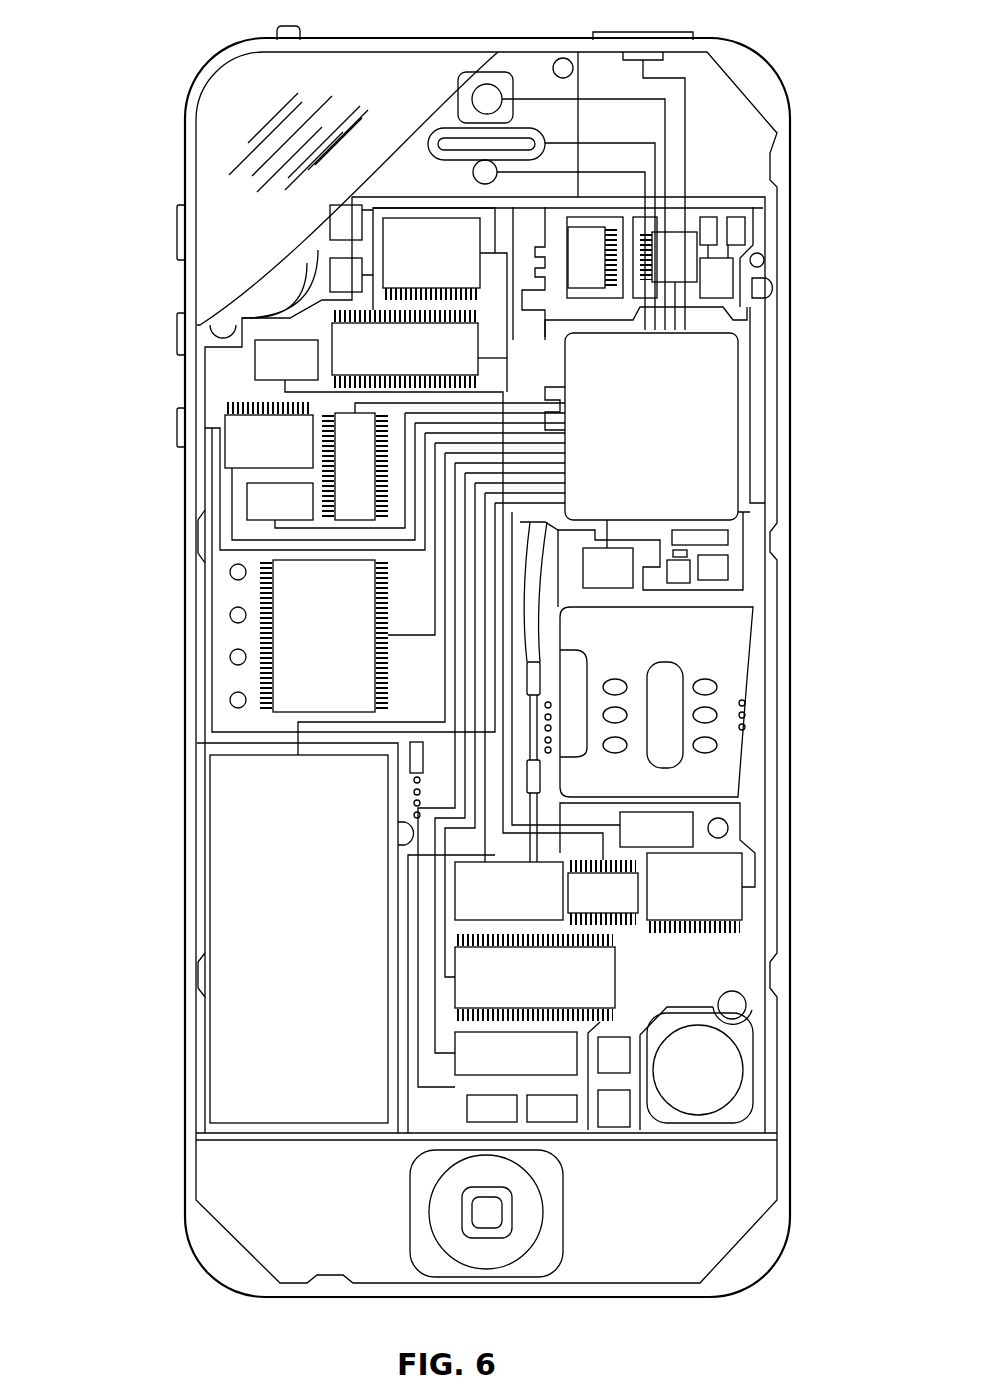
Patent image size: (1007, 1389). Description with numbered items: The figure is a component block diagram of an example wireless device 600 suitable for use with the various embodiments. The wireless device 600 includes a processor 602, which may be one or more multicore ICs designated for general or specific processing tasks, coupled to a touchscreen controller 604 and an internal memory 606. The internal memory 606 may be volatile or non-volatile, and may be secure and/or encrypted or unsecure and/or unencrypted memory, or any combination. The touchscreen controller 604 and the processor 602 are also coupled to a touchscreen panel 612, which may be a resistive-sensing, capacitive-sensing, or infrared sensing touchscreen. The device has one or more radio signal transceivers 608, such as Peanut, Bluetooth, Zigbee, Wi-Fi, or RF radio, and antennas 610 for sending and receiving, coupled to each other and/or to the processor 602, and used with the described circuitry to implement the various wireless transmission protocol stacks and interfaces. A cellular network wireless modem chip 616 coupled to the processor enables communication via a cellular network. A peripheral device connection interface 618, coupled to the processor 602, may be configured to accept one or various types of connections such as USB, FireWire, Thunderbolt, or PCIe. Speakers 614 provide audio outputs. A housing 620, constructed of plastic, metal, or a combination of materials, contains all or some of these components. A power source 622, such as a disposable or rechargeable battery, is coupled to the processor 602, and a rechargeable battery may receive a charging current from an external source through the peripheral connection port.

The wireless device 600 is at (152, 86).
The processor 602 is at (639, 363).
The touchscreen controller 604 is at (440, 300).
The internal memory 606 is at (419, 349).
The radio signal transceivers 608 is at (687, 233).
The antennas 610 is at (733, 282).
The touchscreen panel 612 is at (212, 157).
The speakers 614 is at (447, 128).
The cellular network wireless modem chip 616 is at (535, 977).
The peripheral device connection interface 618 is at (516, 1053).
The housing 620 is at (790, 1147).
The power source 622 is at (297, 938).